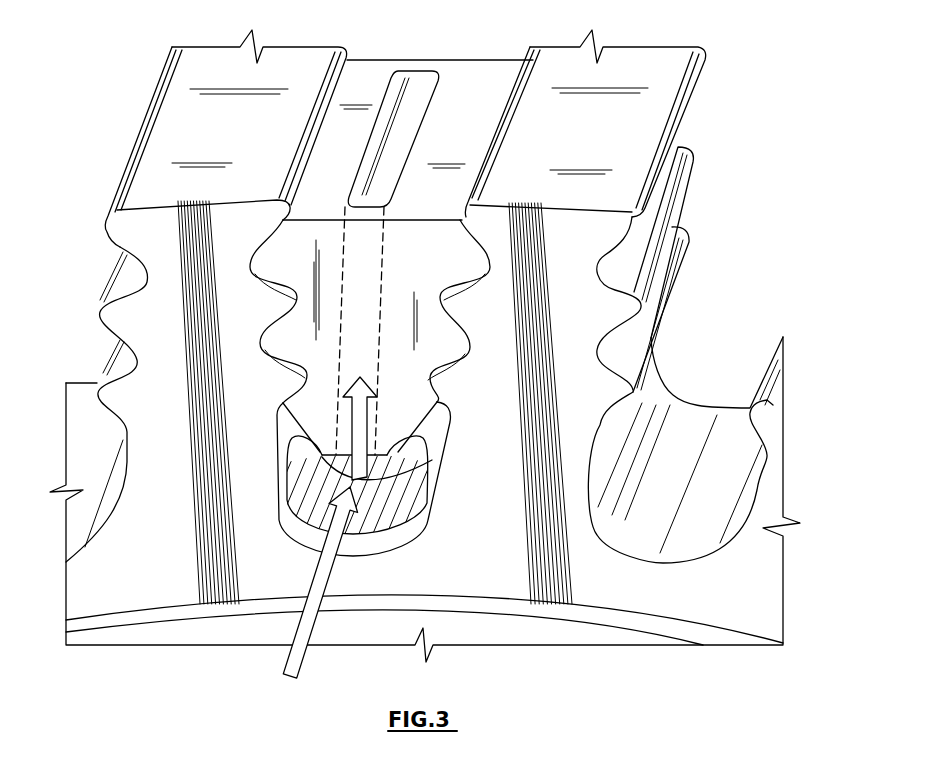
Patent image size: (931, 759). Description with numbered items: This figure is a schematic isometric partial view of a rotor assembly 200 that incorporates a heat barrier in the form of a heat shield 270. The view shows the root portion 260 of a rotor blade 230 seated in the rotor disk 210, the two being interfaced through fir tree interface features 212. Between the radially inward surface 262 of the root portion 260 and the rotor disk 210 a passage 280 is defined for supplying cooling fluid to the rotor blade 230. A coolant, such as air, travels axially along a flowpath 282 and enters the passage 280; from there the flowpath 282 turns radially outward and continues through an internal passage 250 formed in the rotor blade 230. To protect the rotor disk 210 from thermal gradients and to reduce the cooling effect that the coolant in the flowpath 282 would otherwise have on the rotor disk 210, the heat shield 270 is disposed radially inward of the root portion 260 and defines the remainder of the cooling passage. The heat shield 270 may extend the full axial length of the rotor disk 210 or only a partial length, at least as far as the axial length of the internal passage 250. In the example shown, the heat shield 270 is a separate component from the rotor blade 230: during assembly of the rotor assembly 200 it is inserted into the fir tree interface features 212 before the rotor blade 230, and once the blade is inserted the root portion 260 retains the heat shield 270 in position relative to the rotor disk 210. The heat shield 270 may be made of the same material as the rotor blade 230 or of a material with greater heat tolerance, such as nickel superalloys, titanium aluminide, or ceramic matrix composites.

The rotor assembly 200 is at (742, 128).
The rotor disk 210 is at (518, 580).
The fir tree interface features 212 is at (238, 220).
The rotor blade 230 is at (408, 119).
The internal passage 250 is at (415, 95).
The root portion 260 is at (405, 238).
The radially inward surface 262 is at (403, 497).
The heat shield 270 is at (365, 543).
The passage 280 is at (432, 460).
The flowpath 282 is at (288, 658).